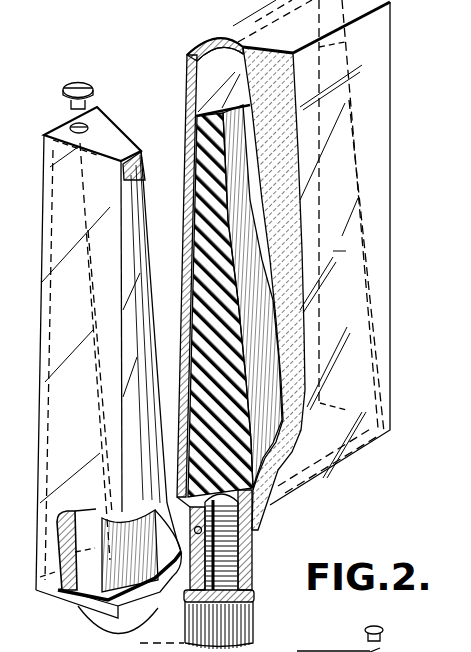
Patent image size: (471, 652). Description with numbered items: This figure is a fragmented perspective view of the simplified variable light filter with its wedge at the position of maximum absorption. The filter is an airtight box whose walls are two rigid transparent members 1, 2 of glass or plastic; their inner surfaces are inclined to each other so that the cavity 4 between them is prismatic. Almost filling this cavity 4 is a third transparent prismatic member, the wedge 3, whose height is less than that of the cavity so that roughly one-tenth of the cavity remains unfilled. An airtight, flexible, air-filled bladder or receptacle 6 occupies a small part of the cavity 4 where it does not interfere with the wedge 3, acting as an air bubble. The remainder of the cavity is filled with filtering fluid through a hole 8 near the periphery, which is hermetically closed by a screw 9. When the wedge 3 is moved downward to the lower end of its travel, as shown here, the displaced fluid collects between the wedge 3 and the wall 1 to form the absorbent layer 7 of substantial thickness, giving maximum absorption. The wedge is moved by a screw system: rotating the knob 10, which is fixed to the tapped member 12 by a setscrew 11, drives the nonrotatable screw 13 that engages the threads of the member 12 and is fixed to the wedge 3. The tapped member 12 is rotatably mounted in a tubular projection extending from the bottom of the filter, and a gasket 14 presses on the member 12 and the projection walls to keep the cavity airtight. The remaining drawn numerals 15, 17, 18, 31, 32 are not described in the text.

The transparent member 1 is at (345, 225).
The transparent member 2 is at (186, 71).
The wedge 3 is at (190, 190).
The cavity 4 is at (229, 60).
The bladder or receptacle 6 is at (170, 556).
The absorbent layer 7 is at (78, 221).
The hole 8 is at (70, 127).
The screw 9 is at (79, 81).
The knob 10 is at (253, 628).
The setscrew 11 is at (253, 604).
The tapped member 12 is at (187, 605).
The screw 13 is at (190, 525).
The gasket 14 is at (242, 537).
The disc 15 is at (140, 647).
The bar 17 is at (320, 651).
The base 18 is at (267, 649).
The bracket 31 is at (380, 651).
The screw 32 is at (378, 630).